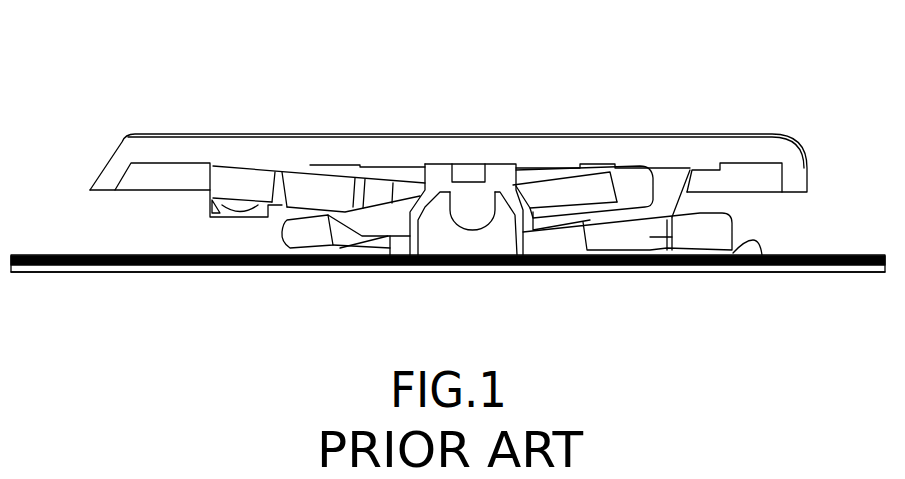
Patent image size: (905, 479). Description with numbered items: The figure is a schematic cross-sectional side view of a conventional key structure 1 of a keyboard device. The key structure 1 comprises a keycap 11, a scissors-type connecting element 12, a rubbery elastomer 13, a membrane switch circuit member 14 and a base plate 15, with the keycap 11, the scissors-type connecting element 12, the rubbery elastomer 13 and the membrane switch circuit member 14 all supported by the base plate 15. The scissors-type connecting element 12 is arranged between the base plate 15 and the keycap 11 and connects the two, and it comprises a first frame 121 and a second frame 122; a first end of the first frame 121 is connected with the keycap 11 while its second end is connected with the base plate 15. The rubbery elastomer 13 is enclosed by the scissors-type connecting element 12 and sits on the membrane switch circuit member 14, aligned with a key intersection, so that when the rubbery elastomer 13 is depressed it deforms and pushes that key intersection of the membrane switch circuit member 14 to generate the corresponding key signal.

The key structure 1 is at (755, 67).
The keycap 11 is at (405, 136).
The scissors-type connecting element 12 is at (442, 175).
The first frame 121 is at (328, 190).
The second frame 122 is at (368, 218).
The rubbery elastomer 13 is at (500, 173).
The membrane switch circuit member 14 is at (735, 263).
The base plate 15 is at (662, 270).